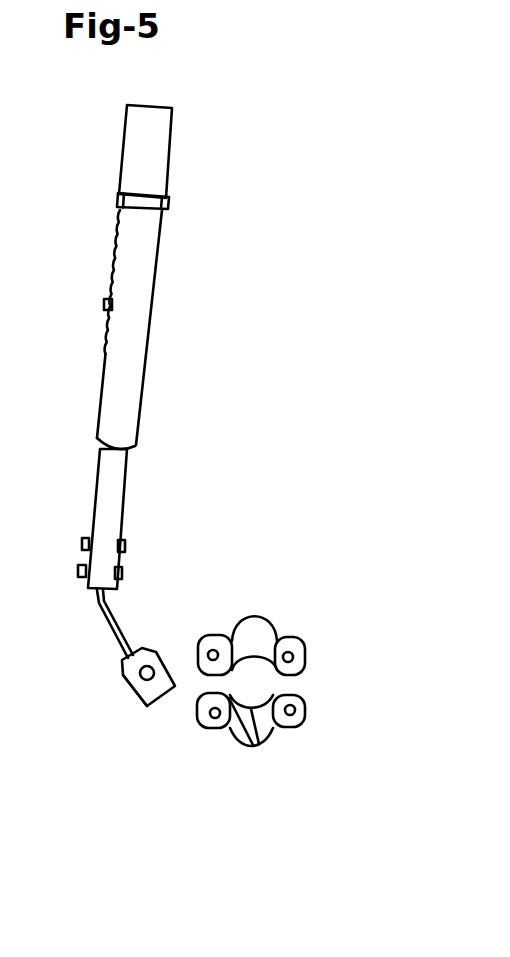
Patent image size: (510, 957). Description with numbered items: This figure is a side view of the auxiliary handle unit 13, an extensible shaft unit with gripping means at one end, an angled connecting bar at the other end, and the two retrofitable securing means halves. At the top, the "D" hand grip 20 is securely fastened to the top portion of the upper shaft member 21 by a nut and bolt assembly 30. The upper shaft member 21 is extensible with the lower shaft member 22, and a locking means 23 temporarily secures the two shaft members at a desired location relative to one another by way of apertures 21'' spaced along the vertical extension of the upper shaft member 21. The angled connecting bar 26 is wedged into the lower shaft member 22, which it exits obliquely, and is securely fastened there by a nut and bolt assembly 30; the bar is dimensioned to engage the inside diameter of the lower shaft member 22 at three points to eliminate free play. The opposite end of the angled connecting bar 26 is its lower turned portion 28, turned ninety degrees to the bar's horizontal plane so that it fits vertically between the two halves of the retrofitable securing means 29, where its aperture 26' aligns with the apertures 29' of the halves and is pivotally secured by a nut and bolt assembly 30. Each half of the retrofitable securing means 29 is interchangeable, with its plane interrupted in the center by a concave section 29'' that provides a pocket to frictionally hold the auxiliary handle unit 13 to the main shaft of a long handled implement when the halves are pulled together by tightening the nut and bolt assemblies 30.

The auxiliary handle unit 13 is at (197, 500).
The "D" hand grip 20 is at (148, 152).
The upper shaft member 21 is at (171, 329).
The apertures 21'' is at (83, 279).
The lower shaft member 22 is at (100, 525).
The locking means 23 is at (102, 306).
The angled connecting bar 26 is at (79, 627).
The rod end 26' is at (105, 716).
The lower turned portion 28 is at (115, 667).
The retrofitable securing means 29 is at (303, 679).
The apertures 29' is at (257, 684).
The concave section 29'' is at (253, 683).
The nut and bolt assembly 30 is at (177, 205).